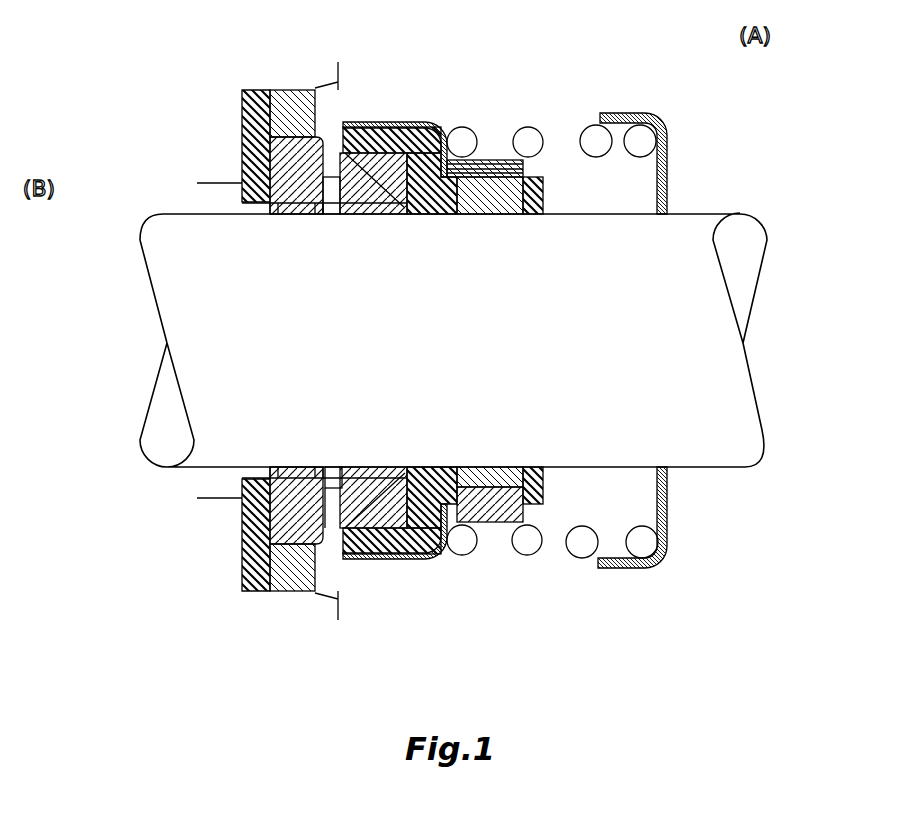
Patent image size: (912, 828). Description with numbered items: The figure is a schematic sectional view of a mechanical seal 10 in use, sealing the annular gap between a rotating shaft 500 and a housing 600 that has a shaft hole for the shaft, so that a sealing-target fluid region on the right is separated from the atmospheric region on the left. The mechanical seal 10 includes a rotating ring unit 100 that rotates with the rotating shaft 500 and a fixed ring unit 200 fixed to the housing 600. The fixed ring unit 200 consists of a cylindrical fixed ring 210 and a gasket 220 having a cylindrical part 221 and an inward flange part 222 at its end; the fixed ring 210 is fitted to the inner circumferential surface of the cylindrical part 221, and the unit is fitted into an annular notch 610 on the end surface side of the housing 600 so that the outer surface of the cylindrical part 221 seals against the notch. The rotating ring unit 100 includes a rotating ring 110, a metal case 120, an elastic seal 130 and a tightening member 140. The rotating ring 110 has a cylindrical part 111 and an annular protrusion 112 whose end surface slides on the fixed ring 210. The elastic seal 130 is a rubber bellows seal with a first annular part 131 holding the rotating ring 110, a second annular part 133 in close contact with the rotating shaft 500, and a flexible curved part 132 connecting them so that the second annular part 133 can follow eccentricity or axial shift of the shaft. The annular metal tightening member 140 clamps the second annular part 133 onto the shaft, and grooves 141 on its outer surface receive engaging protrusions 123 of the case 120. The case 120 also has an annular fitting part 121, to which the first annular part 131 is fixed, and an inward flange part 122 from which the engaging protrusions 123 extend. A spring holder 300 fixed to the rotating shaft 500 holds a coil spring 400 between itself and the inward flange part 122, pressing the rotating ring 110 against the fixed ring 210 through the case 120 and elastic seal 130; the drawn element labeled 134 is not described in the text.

The mechanical seal 10 is at (490, 87).
The rotating ring unit 100 is at (565, 204).
The rotating ring 110 is at (354, 220).
The cylindrical part 111 is at (387, 556).
The annular protrusion 112 is at (330, 500).
The metal case 120 is at (411, 110).
The annular fitting part 121 is at (413, 560).
The inward flange part 122 is at (463, 548).
The engaging protrusion 123 is at (493, 160).
The elastic seal 130 is at (552, 188).
The first annular part 131 is at (386, 180).
The curved part 132 is at (413, 205).
The second annular part 133 is at (486, 203).
The ring holder 134 is at (490, 486).
The tightening member 140 is at (498, 535).
The groove 141 is at (524, 176).
The fixed ring unit 200 is at (216, 200).
The fixed ring 210 is at (314, 157).
The gasket 220 is at (238, 117).
The cylindrical part 221 is at (273, 590).
The inward flange part 222 is at (250, 530).
The spring holder 300 is at (668, 505).
The coil spring 400 is at (582, 545).
The rotating shaft 500 is at (453, 340).
The housing 600 is at (275, 71).
The annular notch 610 is at (287, 100).